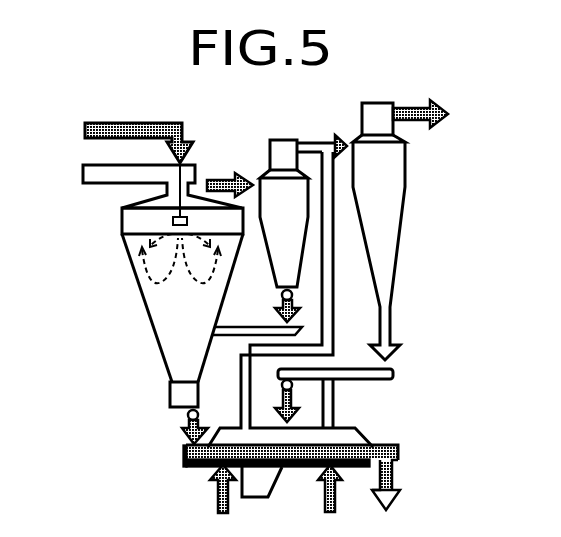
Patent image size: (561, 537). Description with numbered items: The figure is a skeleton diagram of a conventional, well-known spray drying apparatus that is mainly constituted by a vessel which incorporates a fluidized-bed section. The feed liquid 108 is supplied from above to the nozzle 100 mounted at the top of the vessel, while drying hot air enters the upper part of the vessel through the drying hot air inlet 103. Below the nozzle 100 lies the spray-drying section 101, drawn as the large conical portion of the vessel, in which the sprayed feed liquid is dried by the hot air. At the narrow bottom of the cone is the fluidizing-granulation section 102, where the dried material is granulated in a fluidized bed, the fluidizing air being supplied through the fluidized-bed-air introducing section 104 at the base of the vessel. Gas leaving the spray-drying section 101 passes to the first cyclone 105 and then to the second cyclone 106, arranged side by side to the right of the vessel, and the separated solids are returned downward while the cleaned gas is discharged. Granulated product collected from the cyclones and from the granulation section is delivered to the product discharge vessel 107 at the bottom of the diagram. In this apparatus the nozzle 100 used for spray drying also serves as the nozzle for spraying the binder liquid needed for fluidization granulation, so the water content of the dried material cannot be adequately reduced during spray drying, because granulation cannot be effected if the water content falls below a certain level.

The nozzle 100 is at (173, 221).
The spray-drying section 101 is at (170, 307).
The fluidizing-granulation section 102 is at (177, 370).
The drying hot air inlet 103 is at (83, 172).
The fluidized-bed-air introducing section 104 is at (172, 407).
The first cyclone 105 is at (282, 141).
The second cyclone 106 is at (408, 157).
The product discharge vessel 107 is at (355, 427).
The feed liquid 108 is at (124, 123).